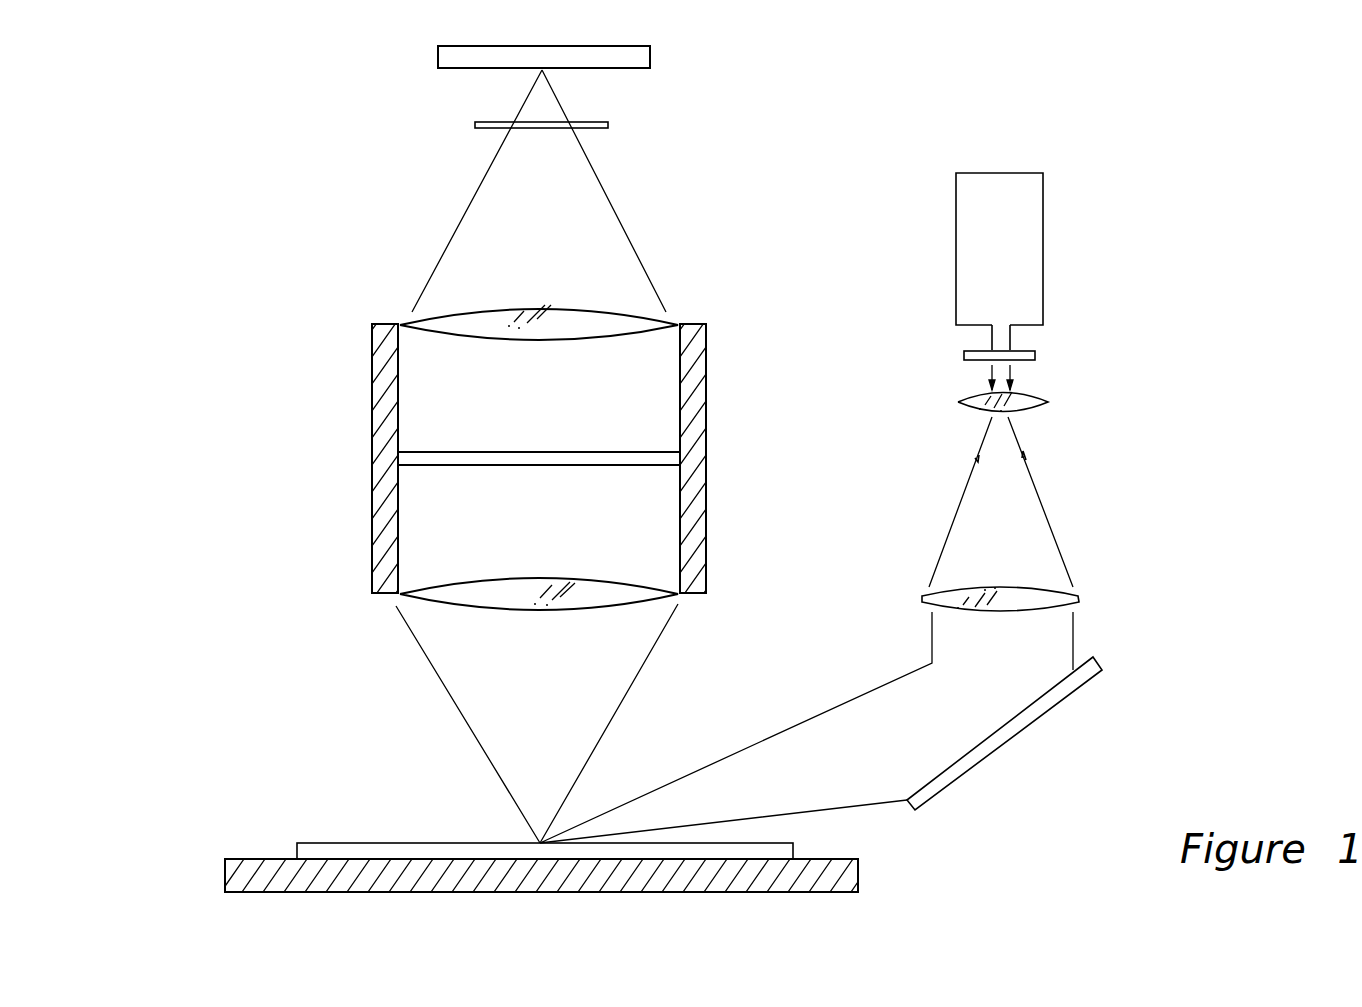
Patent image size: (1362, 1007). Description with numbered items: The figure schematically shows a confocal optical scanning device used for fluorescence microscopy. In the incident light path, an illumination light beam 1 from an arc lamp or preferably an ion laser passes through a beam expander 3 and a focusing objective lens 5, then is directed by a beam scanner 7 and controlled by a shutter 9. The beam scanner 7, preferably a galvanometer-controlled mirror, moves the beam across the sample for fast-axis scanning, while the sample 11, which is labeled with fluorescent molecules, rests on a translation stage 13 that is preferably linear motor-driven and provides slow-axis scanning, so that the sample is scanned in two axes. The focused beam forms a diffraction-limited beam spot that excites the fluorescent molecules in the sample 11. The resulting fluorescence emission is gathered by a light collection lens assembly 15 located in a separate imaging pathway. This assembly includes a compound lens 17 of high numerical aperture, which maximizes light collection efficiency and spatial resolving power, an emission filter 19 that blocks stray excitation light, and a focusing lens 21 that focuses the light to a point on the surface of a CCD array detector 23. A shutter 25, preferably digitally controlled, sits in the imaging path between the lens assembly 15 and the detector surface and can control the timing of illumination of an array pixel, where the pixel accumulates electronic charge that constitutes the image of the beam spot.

The illumination light beam 1 is at (1043, 232).
The beam expander 3 is at (1040, 392).
The focusing objective lens 5 is at (1052, 590).
The beam scanner 7 is at (1050, 710).
The shutter 9 is at (1035, 352).
The sample 11 is at (340, 843).
The translation stage 13 is at (260, 859).
The light collection lens assembly 15 is at (336, 384).
The compound lens 17 is at (620, 580).
The emission filter 19 is at (612, 452).
The focusing lens 21 is at (492, 306).
The CCD array detector 23 is at (438, 52).
The shutter 25 is at (485, 122).